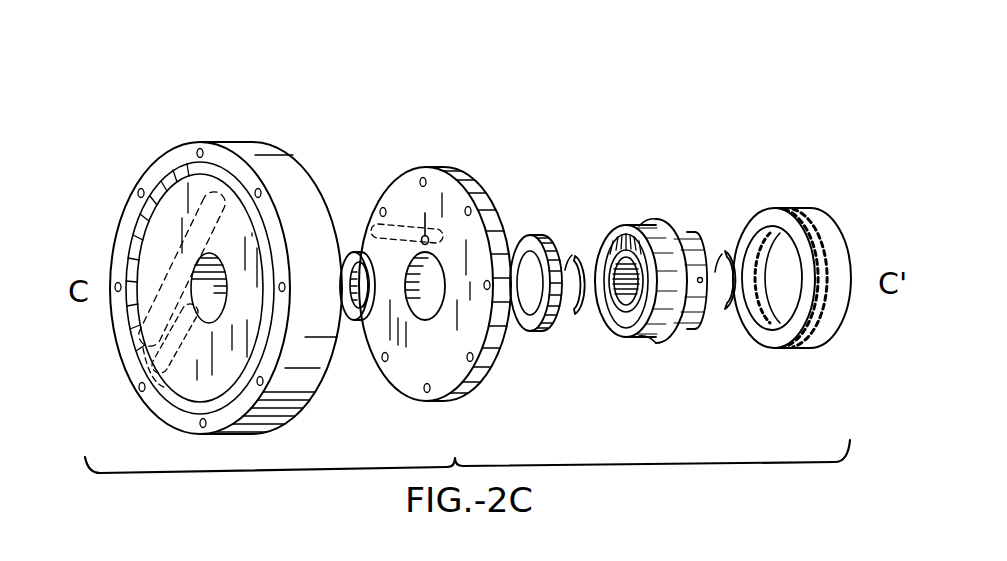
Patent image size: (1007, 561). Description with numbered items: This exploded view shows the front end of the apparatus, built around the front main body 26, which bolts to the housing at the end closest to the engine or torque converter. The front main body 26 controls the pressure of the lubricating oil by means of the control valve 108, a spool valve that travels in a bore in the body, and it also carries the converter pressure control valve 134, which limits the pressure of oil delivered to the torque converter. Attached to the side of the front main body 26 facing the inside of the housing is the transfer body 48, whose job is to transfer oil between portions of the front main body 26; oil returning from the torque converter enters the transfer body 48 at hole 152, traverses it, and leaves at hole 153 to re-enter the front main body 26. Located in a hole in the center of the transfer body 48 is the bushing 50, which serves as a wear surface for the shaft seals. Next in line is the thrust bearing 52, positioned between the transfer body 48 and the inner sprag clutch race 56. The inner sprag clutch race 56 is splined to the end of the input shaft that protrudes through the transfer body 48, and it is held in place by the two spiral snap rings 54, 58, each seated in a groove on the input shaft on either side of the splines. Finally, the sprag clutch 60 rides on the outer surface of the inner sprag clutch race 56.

The front main body 26 is at (290, 165).
The control valve 108 is at (172, 265).
The converter pressure control valve 134 is at (160, 391).
The transfer body 48 is at (493, 193).
The bushing 50 is at (362, 323).
The thrust bearing 52 is at (545, 330).
The spiral snap ring 54 is at (572, 314).
The inner sprag clutch race 56 is at (660, 217).
The spiral snap ring 58 is at (735, 250).
The sprag clutch 60 is at (793, 347).
The hole 152 is at (425, 213).
The hole 153 is at (377, 232).